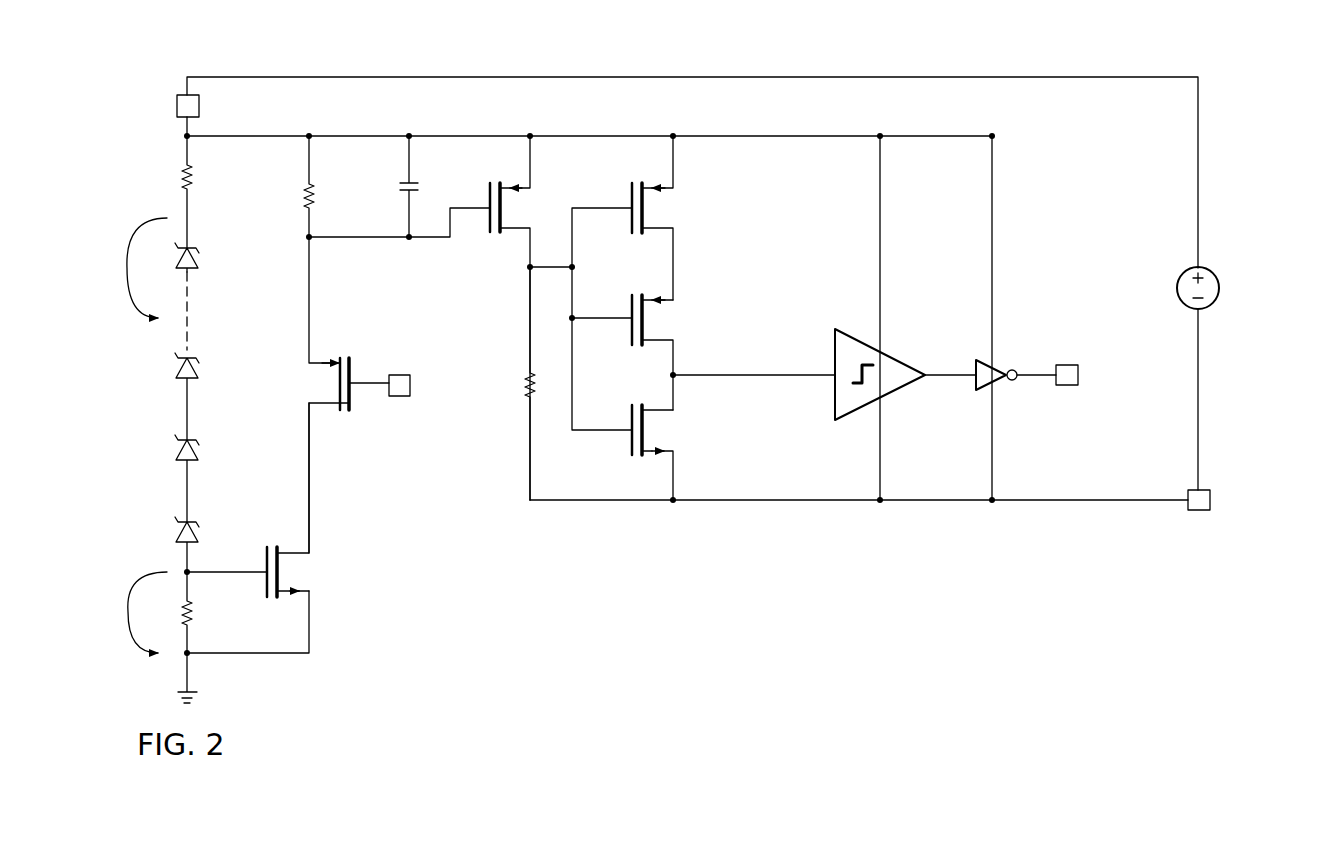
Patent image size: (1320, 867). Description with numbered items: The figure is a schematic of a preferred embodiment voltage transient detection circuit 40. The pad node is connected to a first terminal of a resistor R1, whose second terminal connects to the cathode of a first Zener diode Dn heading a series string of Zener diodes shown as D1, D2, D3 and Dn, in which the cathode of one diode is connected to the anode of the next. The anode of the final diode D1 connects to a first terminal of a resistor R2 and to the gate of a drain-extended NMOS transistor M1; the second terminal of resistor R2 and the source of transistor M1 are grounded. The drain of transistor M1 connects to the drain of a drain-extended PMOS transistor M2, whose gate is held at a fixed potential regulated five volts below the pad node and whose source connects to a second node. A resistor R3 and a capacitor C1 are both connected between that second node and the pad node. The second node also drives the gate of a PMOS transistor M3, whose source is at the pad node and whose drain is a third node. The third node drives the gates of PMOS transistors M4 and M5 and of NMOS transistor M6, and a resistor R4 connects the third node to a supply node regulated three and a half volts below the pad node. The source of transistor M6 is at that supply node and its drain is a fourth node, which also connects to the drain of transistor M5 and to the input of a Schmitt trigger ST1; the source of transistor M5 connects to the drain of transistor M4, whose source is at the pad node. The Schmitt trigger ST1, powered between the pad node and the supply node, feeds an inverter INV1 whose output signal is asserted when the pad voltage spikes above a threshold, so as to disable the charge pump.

The voltage transient detection circuit 40 is at (771, 49).
The resistor R1 is at (173, 192).
The resistor R2 is at (172, 612).
The resistor R3 is at (293, 186).
The resistor R4 is at (516, 383).
The capacitor C1 is at (395, 186).
The Zener diode Dn is at (173, 257).
The Zener diode D3 is at (173, 396).
The Zener diode D2 is at (173, 478).
The Zener diode D1 is at (173, 544).
The NMOS transistor M1 is at (259, 528).
The PMOS transistor M2 is at (376, 395).
The PMOS transistor M3 is at (522, 318).
The PMOS transistor M4 is at (664, 218).
The PMOS transistor M5 is at (664, 352).
The NMOS transistor M6 is at (664, 452).
The Schmitt trigger ST1 is at (905, 374).
The inverter INV1 is at (1056, 388).